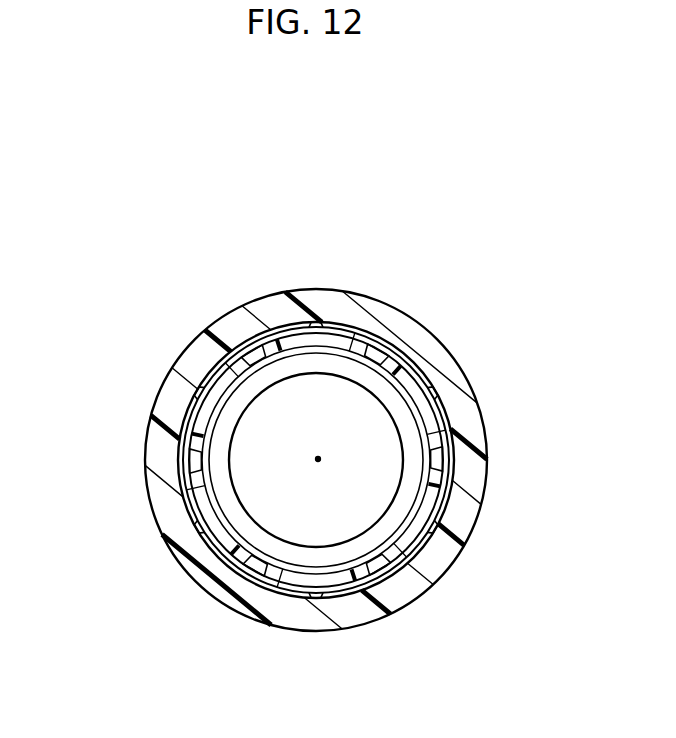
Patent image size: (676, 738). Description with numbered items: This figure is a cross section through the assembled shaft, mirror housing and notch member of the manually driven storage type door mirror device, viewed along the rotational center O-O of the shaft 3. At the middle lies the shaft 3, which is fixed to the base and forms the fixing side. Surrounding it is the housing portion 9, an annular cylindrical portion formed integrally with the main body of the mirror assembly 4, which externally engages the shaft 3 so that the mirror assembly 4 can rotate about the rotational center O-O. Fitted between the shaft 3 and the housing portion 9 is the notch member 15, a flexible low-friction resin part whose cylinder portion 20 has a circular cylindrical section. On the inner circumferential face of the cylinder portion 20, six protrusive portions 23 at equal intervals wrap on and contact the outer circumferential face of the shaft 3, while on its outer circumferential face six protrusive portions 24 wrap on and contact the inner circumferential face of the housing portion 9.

The mirror assembly 4 is at (182, 352).
The housing portion 9 is at (203, 395).
The notch member 15 is at (183, 497).
The shaft 3 is at (228, 535).
The cylinder portion 20 is at (357, 577).
The protrusive portion 23 is at (360, 376).
The protrusive portion 24 is at (320, 327).
The rotational center O-O is at (320, 458).